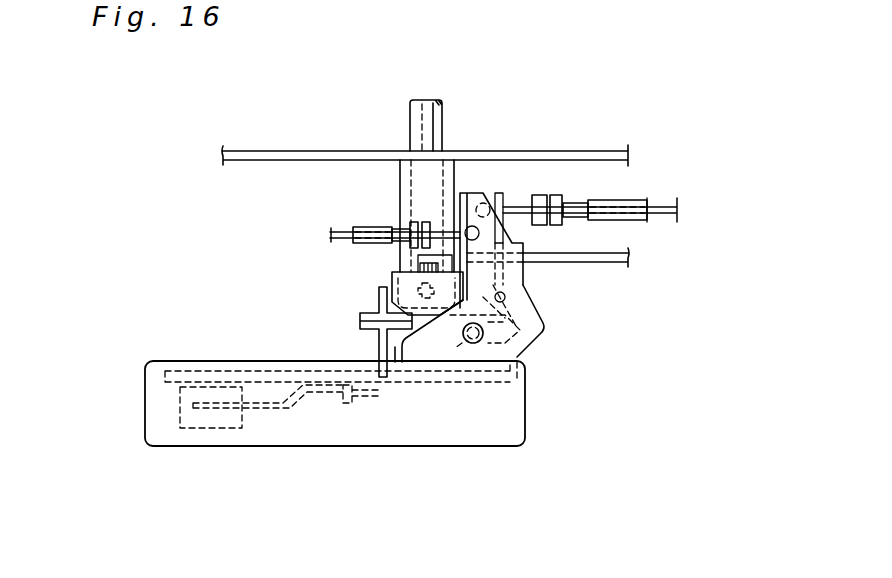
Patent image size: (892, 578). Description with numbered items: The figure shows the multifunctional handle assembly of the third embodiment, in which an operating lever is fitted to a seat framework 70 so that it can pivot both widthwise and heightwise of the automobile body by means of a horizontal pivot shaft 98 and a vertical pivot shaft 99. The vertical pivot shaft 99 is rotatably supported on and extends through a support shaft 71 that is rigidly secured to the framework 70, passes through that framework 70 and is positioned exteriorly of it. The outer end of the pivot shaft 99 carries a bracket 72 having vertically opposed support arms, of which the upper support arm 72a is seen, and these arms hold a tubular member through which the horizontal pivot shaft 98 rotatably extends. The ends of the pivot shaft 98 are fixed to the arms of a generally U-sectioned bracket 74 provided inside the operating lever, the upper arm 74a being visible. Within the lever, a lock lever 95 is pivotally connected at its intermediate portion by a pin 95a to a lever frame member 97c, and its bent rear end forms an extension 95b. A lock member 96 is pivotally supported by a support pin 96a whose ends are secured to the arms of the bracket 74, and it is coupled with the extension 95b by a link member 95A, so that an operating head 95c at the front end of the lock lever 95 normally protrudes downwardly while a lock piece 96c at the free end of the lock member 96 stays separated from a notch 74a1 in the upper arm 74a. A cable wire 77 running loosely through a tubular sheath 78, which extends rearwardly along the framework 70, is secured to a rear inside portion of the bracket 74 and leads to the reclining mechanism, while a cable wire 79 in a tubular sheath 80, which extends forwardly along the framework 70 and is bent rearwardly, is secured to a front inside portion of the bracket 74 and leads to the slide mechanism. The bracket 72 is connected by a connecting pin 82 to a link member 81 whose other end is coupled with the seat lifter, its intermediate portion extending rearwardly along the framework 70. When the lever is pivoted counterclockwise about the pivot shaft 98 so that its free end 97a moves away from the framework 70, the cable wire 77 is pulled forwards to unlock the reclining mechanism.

The seat framework 70 is at (556, 151).
The support shaft 71 is at (443, 118).
The bracket 72 is at (392, 278).
The support arm 72a is at (428, 350).
The U-sectioned bracket 74 is at (547, 322).
The upper arm 74a is at (465, 345).
The notch 74a1 is at (520, 347).
The cable wire 77 is at (668, 207).
The tubular sheath 78 is at (632, 200).
The cable wire 79 is at (333, 237).
The tubular sheath 80 is at (360, 226).
The link member 81 is at (612, 253).
The connecting pin 82 is at (417, 255).
The lock lever 95 is at (273, 410).
The pin 95a is at (343, 403).
The link member 95A is at (395, 360).
The extension 95b is at (380, 298).
The operating head 95c is at (205, 430).
The lock member 96 is at (537, 300).
The support pin 96a is at (505, 296).
The lock piece 96c is at (537, 332).
The free end 97a is at (147, 408).
The lever frame member 97c is at (237, 370).
The horizontal pivot shaft 98 is at (480, 342).
The vertical pivot shaft 99 is at (400, 182).